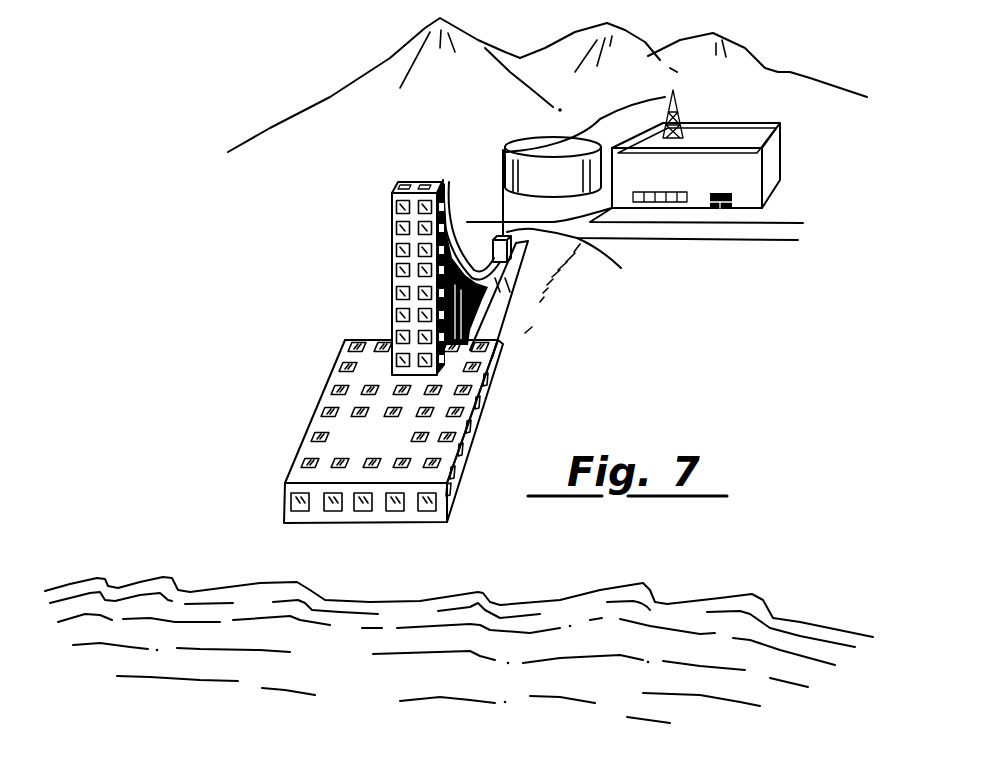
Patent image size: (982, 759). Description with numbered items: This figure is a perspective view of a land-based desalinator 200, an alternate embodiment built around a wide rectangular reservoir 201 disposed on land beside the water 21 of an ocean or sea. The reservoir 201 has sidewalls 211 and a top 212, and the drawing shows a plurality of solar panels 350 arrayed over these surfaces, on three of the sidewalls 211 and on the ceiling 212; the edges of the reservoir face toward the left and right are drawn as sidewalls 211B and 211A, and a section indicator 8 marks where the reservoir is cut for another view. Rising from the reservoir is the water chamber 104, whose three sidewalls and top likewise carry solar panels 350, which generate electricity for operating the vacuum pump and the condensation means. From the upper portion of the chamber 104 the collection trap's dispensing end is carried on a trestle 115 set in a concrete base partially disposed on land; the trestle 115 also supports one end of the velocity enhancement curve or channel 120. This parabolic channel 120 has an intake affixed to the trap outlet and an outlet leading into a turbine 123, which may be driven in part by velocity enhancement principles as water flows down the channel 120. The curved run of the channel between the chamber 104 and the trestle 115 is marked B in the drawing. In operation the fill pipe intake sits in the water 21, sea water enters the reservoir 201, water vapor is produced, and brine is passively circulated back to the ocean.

The water chamber 104 is at (393, 218).
The solar panels 350 is at (392, 268).
The velocity enhancement curve or channel 120 is at (490, 242).
The turbine 123 is at (652, 257).
The trestle 115 is at (470, 297).
The land-based desalinator 200 is at (330, 265).
The top 212 is at (375, 360).
The platform side edge 211B is at (315, 422).
The platform right side 211A is at (490, 425).
The sidewalls 211 is at (313, 518).
The reservoir 201 is at (410, 443).
The section line 8- 8 is at (280, 468).
The chute B is at (462, 328).
The water 21 is at (345, 666).